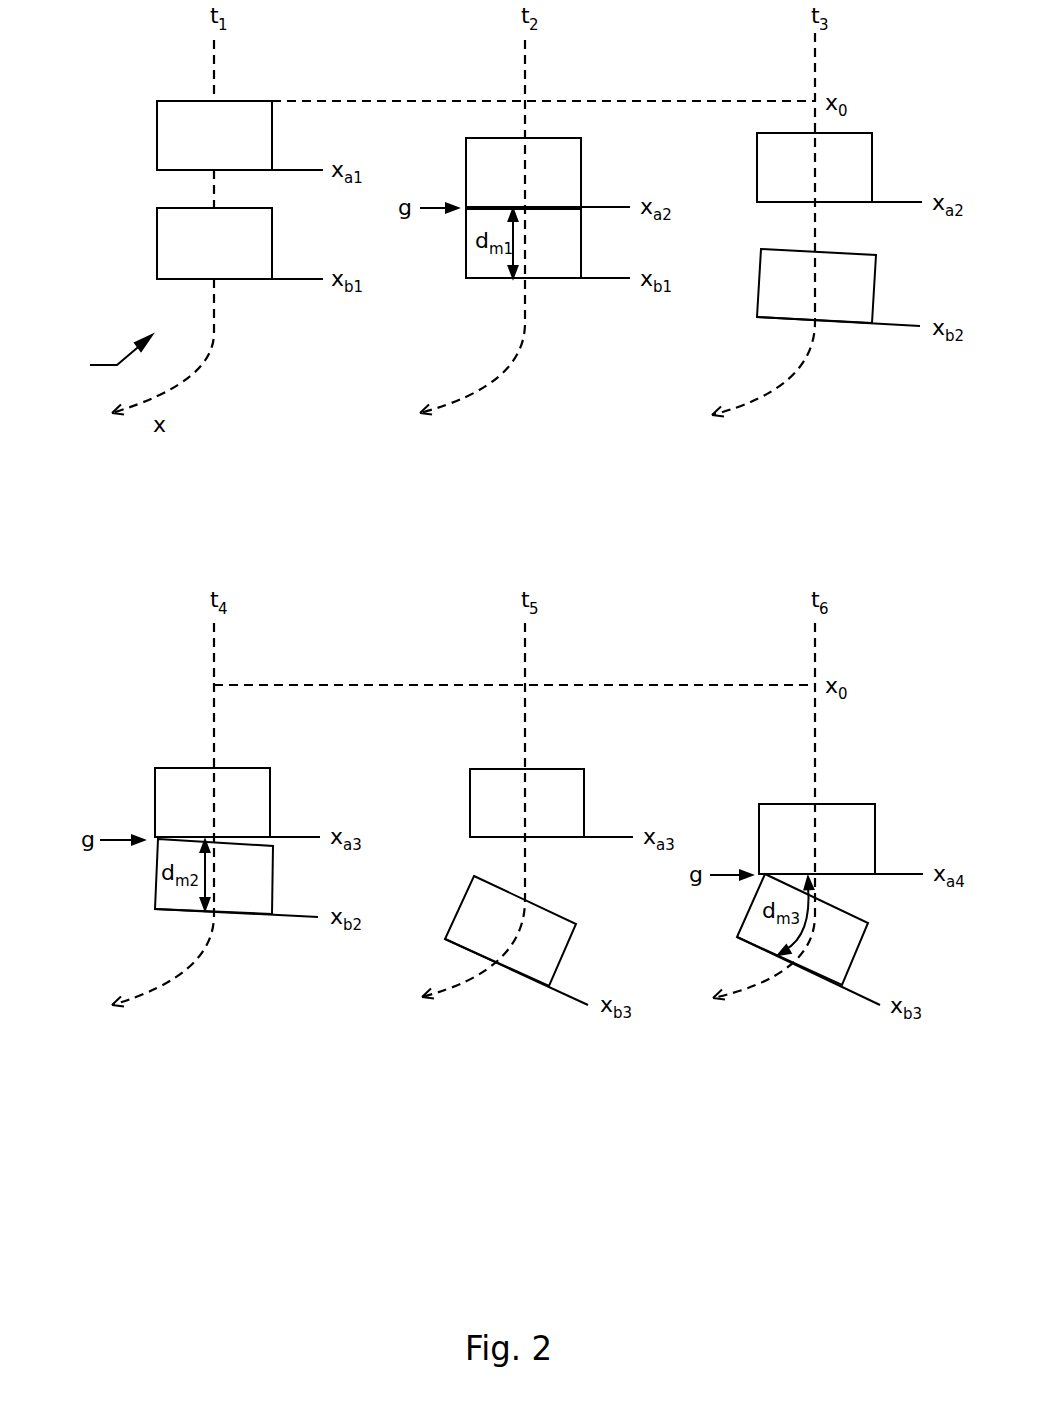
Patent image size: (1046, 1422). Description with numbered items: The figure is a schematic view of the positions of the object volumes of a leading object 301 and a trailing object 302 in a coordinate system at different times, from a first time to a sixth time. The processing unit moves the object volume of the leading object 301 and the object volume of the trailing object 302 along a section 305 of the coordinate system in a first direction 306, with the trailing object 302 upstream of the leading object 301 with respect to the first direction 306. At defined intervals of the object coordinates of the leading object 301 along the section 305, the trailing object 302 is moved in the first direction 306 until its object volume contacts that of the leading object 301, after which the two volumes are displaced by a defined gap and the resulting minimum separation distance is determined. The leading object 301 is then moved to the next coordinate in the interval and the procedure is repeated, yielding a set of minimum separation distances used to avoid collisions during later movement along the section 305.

The trailing object 302 is at (157, 128).
The leading object 301 is at (157, 236).
The section of the coordinate system 305 is at (99, 358).
The first direction 306 is at (194, 367).